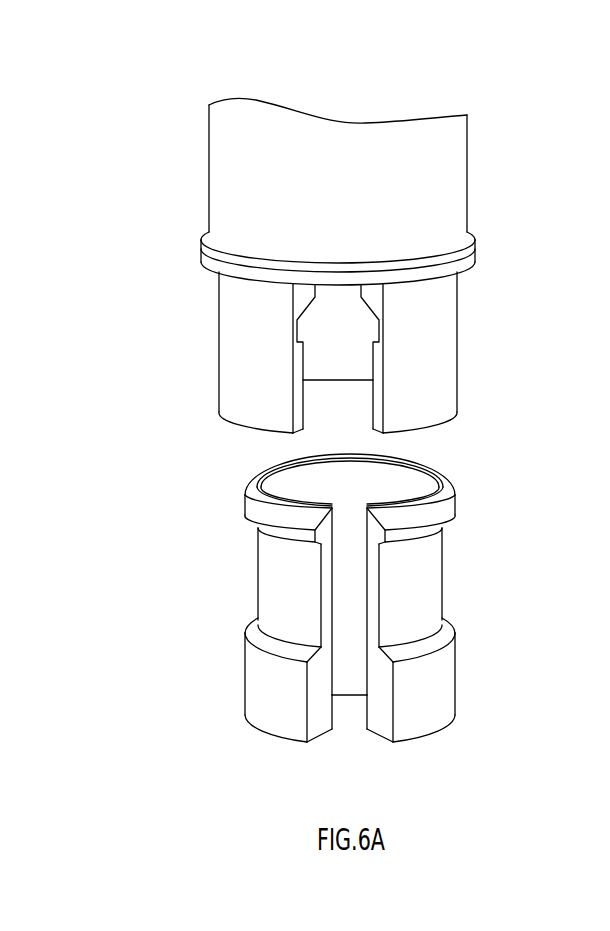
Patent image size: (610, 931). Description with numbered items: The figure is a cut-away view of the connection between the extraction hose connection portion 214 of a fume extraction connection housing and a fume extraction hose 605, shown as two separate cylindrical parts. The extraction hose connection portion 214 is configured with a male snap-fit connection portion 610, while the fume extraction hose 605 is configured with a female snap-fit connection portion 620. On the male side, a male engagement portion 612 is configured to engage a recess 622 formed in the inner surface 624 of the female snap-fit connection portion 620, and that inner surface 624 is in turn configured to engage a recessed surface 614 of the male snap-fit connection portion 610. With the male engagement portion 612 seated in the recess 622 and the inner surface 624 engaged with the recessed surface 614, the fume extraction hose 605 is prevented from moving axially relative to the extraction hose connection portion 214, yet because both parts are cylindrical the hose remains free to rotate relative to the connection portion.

The fume extraction hose 605 is at (460, 141).
The female snap-fit connection portion 620 is at (447, 305).
The recess 622 is at (297, 331).
The inner surface 624 is at (373, 366).
The male snap-fit connection portion 610 is at (442, 482).
The male engagement portion 612 is at (453, 507).
The recessed surface 614 is at (432, 577).
The extraction hose connection portion 214 is at (445, 660).